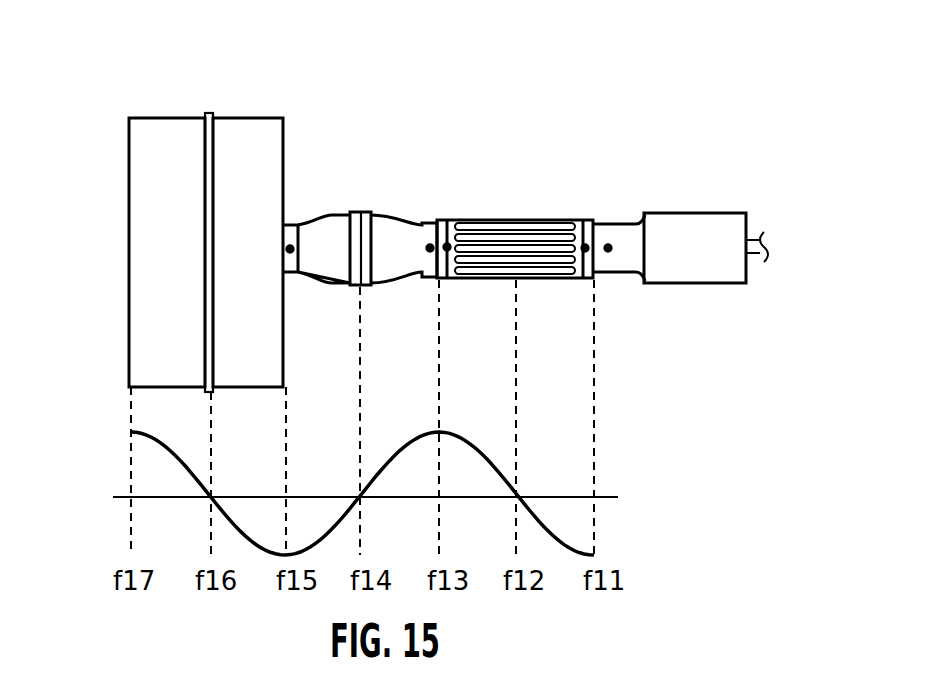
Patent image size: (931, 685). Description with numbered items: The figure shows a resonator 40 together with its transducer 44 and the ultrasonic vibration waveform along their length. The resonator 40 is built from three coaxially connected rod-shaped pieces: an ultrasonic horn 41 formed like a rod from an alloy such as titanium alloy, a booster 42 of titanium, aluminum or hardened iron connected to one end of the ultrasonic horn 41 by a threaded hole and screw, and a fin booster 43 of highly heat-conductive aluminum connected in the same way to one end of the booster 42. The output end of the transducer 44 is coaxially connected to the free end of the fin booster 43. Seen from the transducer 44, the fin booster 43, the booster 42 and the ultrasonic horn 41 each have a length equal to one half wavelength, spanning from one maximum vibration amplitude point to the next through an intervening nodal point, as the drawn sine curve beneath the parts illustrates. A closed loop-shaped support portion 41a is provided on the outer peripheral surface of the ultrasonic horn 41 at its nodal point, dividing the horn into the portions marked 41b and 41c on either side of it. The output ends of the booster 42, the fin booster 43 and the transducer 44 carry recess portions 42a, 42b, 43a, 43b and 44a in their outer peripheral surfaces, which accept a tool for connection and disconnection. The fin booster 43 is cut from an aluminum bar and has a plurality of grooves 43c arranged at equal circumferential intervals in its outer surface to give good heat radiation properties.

The resonator 40 is at (328, 58).
The ultrasonic horn 41 is at (195, 219).
The support portion 41a is at (208, 114).
The rear mass block 41b is at (145, 118).
The front mass block 41c is at (246, 118).
The booster 42 is at (247, 207).
The recess portion 42a is at (288, 250).
The recess portion 42b is at (428, 250).
The fin booster 43 is at (586, 173).
The recess portion 43a is at (449, 246).
The recess portion 43b is at (585, 244).
The grooves 43c is at (526, 222).
The transducer 44 is at (686, 214).
The recess portion 44a is at (610, 246).